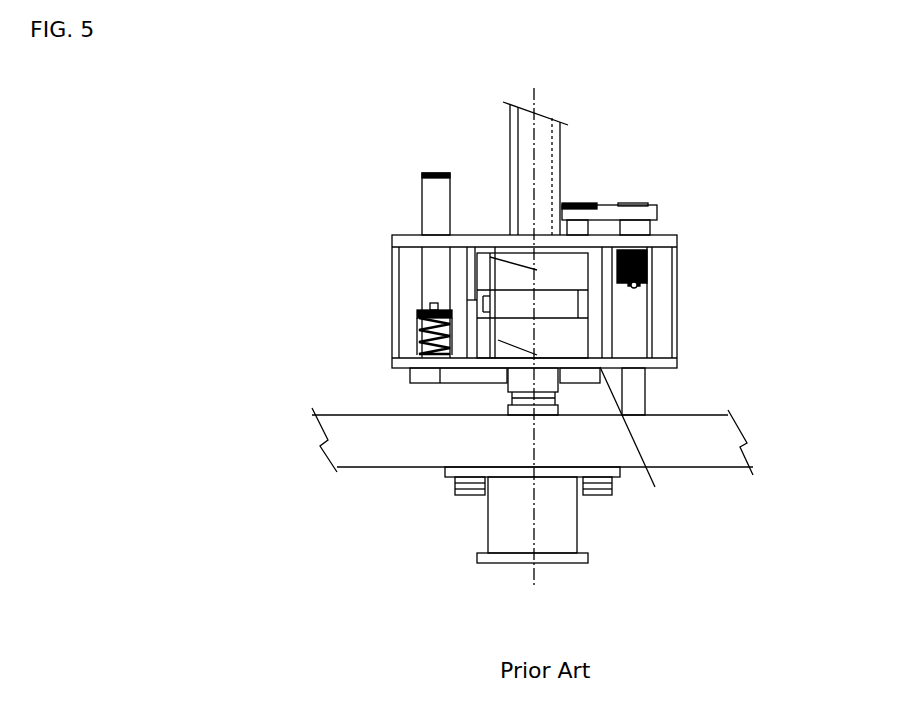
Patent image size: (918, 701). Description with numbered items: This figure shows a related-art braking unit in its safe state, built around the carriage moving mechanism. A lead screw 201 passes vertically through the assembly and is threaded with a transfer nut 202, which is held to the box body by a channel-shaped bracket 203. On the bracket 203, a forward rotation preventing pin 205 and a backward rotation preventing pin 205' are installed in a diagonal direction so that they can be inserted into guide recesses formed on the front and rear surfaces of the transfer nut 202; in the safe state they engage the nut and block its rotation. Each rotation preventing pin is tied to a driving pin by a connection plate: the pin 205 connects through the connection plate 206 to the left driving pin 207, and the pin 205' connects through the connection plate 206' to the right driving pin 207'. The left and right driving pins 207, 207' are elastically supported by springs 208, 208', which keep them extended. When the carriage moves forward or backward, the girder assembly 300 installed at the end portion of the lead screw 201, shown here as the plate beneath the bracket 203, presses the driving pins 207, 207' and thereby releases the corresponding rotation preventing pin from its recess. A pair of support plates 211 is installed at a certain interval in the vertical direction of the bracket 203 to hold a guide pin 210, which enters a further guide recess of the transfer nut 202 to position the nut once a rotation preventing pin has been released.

The lead screw 201 is at (527, 110).
The transfer nut 202 is at (573, 277).
The channel-shaped bracket 203 is at (672, 236).
The forward rotation preventing pin 205 is at (487, 444).
The backward rotation preventing pin 205' is at (609, 153).
The connection plate 206 is at (477, 439).
The connection plate 206' is at (631, 186).
The left driving pin 207 is at (396, 259).
The right driving pin 207' is at (701, 388).
The spring 208 is at (369, 329).
The spring 208' is at (702, 267).
The guide pin 210 is at (495, 230).
The support plate 211 is at (475, 280).
The girder assembly 300 is at (717, 485).